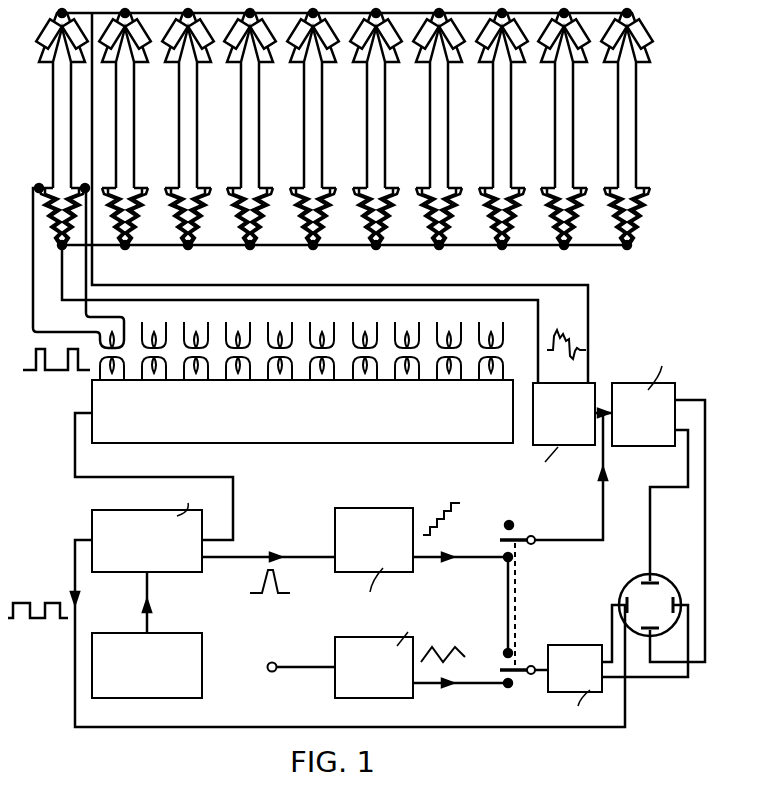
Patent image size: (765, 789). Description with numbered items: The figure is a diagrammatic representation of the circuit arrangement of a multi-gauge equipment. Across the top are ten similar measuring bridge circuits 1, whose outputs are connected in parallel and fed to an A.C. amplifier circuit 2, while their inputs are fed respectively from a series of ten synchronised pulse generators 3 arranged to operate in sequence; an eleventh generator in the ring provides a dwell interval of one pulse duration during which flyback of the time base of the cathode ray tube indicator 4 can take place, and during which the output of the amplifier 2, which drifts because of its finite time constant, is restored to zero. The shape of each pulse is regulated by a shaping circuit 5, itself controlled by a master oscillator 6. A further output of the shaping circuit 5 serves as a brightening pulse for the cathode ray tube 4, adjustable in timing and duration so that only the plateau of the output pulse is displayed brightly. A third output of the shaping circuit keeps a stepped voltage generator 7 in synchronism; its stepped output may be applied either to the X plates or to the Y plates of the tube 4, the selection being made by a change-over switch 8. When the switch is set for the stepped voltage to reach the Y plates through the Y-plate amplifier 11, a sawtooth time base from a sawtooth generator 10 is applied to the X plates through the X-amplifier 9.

The measuring bridge circuit 1 is at (338, 129).
The A.C. amplifier circuit 2 is at (558, 426).
The pulse generators 3 is at (289, 429).
The cathode ray tube indicator 4 is at (670, 580).
The shaping circuit 5 is at (140, 552).
The master oscillator 6 is at (134, 683).
The stepped voltage generator 7 is at (367, 554).
The change-over switch 8 is at (518, 607).
The X-amplifier 9 is at (568, 676).
The sawtooth generator 10 is at (364, 680).
The Y-plate amplifier 11 is at (632, 426).